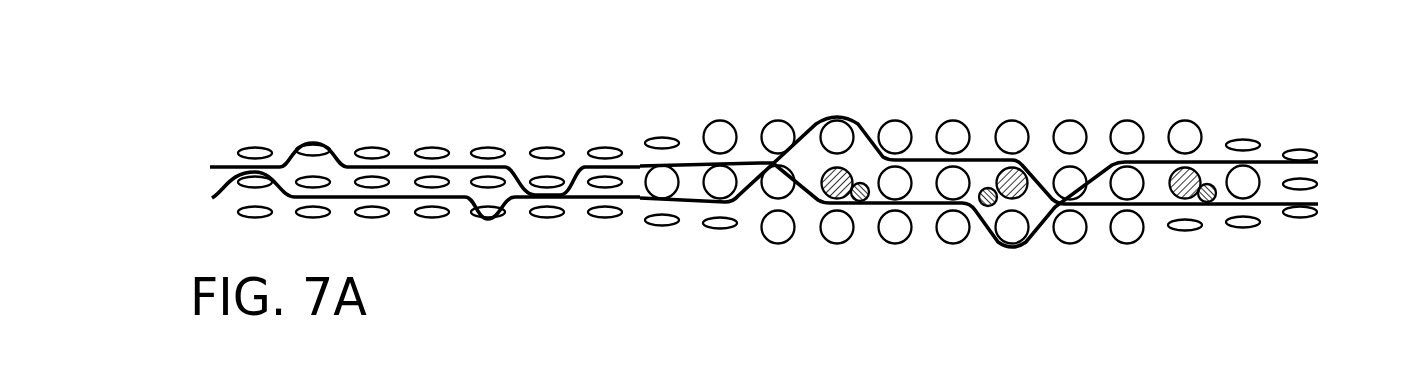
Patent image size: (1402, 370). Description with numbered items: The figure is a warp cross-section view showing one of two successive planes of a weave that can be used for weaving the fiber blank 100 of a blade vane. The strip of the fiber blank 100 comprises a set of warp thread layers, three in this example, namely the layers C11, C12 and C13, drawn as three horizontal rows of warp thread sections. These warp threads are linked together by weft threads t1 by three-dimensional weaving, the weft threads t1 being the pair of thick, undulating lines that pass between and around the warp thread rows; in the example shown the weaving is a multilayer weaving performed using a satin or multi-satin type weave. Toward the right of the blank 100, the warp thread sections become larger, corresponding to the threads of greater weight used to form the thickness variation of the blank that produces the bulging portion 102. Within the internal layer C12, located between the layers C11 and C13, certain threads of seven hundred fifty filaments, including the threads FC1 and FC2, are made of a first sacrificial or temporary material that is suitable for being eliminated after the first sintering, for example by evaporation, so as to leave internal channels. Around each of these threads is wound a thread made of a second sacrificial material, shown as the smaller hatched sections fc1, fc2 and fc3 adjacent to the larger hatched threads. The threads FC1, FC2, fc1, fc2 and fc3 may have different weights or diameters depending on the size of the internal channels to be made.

The fiber blank 100 is at (452, 126).
The bulging portion 102 is at (985, 262).
The warp thread layer C11 is at (805, 222).
The internal warp thread layer C12 is at (805, 183).
The warp thread layer C13 is at (805, 146).
The weft threads t1 is at (403, 170).
The first sacrificial material thread FC1 is at (1160, 90).
The first sacrificial material thread FC2 is at (998, 168).
The second sacrificial material thread fc1 is at (862, 205).
The second sacrificial material thread fc2 is at (982, 204).
The second sacrificial material thread fc3 is at (1212, 202).